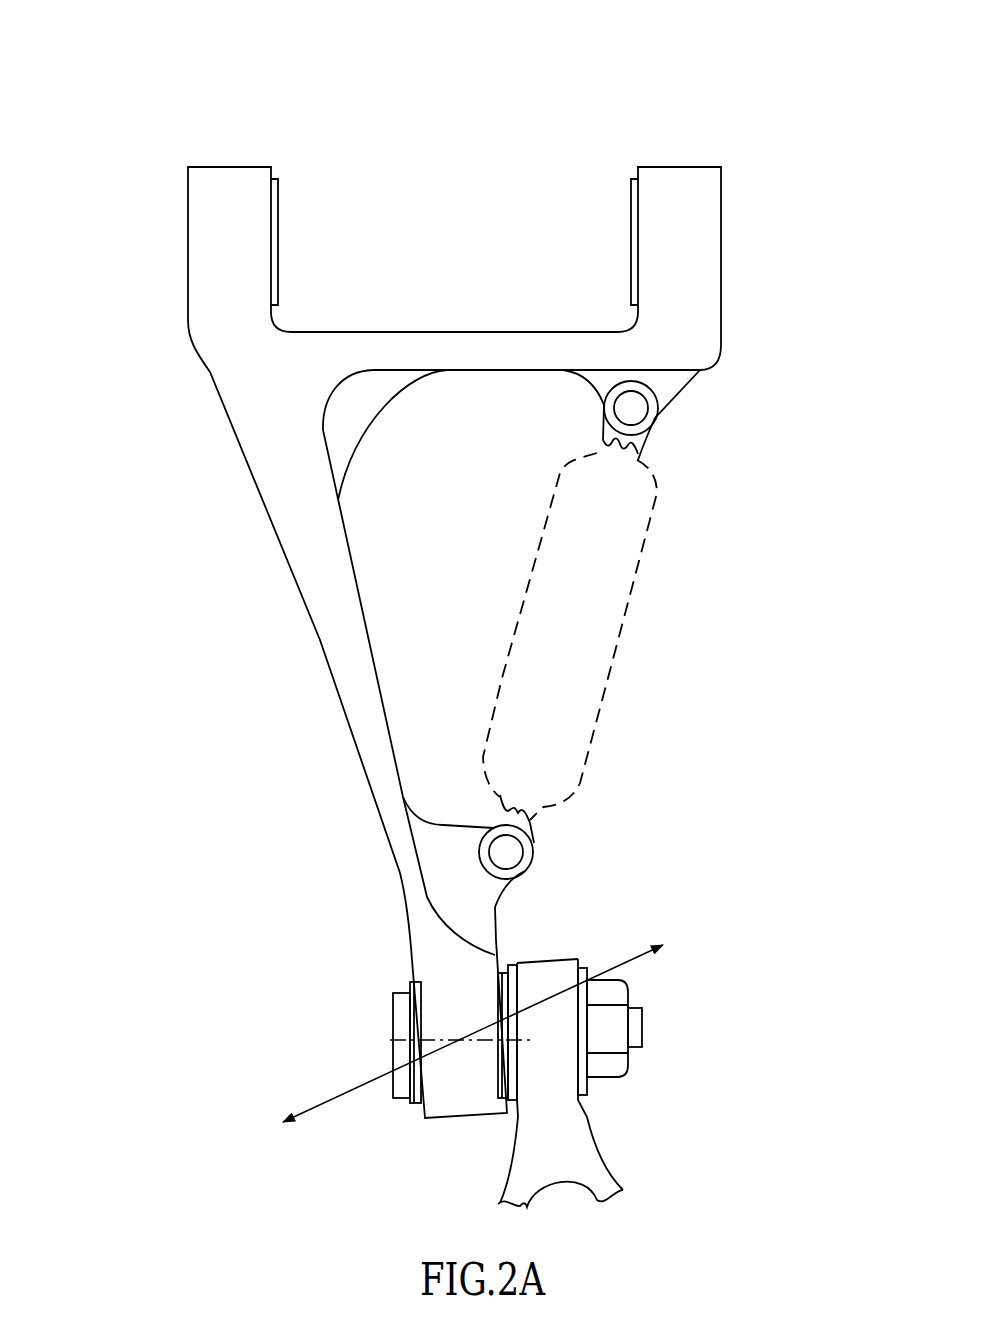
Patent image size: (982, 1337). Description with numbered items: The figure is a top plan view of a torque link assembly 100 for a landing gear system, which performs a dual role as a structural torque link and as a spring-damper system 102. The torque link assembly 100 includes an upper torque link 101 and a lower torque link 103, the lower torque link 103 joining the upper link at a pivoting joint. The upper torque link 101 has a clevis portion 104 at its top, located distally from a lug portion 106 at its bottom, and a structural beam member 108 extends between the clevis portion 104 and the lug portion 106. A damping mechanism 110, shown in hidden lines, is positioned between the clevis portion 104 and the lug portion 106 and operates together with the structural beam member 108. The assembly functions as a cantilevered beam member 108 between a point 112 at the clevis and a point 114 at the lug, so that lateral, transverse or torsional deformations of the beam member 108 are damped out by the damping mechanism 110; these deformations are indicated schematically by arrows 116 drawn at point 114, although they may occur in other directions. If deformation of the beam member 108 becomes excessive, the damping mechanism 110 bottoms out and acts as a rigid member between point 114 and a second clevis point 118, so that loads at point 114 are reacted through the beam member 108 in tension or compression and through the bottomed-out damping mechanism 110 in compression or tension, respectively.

The torque link assembly 100 is at (238, 70).
The upper torque link 101 is at (160, 330).
The spring-damper system 102 is at (187, 374).
The lower torque link 103 is at (623, 1148).
The clevis portion 104 is at (802, 198).
The lug portion 106 is at (372, 977).
The structural beam member 108 is at (333, 683).
The damping mechanism 110 is at (617, 660).
The point 112 is at (233, 242).
The point 114 is at (460, 1040).
The arrows 116 is at (352, 1090).
The point 118 is at (677, 241).